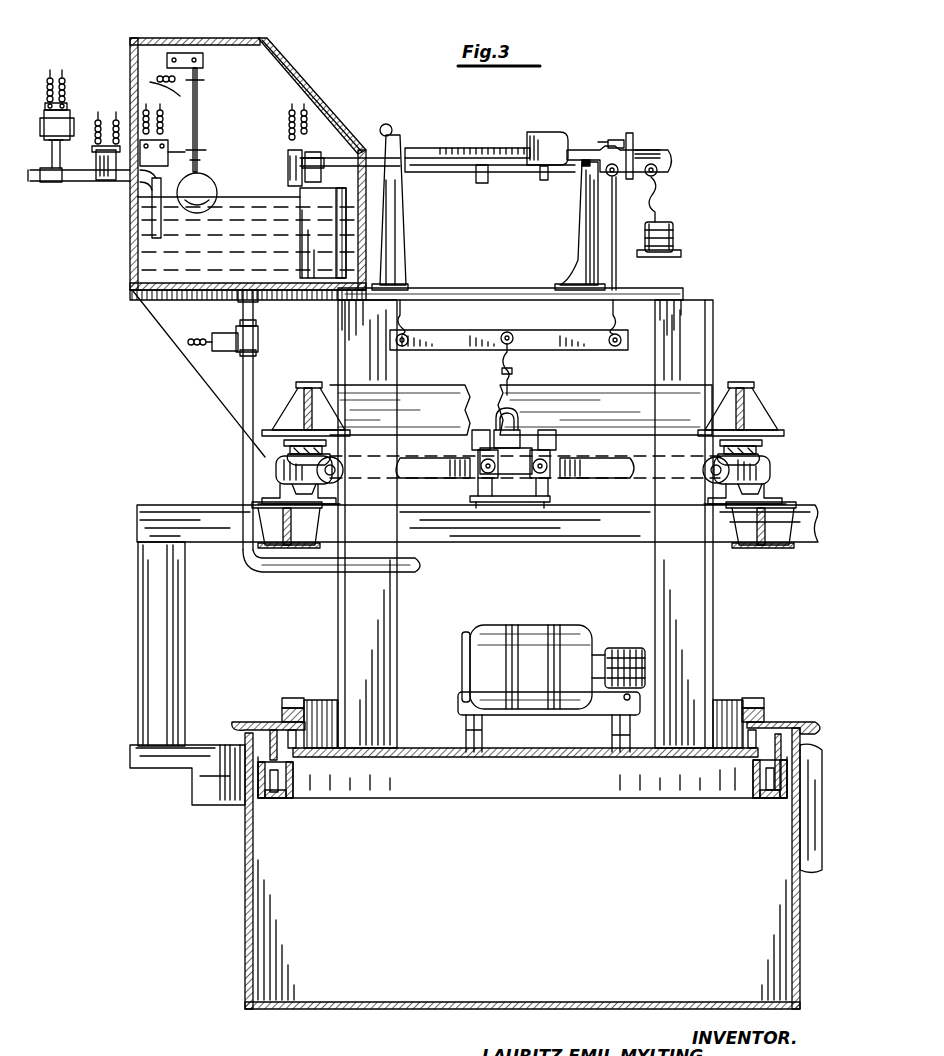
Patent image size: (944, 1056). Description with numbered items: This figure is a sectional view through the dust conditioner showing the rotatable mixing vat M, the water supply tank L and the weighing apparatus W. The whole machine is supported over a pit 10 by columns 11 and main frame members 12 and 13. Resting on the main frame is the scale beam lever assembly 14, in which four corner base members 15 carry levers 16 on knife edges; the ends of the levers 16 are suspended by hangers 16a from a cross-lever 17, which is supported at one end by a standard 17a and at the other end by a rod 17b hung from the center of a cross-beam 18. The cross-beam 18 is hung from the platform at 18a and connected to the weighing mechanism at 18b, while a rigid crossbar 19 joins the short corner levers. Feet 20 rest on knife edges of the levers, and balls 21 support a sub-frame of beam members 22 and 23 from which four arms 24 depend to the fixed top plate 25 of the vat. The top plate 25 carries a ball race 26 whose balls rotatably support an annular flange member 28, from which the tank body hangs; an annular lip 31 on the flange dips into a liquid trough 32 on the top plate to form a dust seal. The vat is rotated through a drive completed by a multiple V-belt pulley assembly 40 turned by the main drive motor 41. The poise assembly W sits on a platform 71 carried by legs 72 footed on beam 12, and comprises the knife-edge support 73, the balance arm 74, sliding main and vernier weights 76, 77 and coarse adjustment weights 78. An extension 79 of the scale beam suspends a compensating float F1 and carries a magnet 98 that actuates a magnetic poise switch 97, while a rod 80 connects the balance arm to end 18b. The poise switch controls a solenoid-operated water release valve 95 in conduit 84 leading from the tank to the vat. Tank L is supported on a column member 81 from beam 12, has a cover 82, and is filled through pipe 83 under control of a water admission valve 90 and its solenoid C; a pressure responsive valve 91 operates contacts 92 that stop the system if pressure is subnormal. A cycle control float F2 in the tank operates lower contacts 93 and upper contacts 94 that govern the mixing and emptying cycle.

The pit 10 is at (230, 788).
The columns 11 is at (175, 610).
The main frame member 12 is at (160, 508).
The main frame member 13 is at (290, 548).
The scale beam lever assembly 14 is at (265, 466).
The corner base members 15 is at (276, 488).
The levers 16 is at (418, 472).
The hangers 16a is at (480, 458).
The cross-lever 17 is at (500, 424).
The standard 17a is at (540, 458).
The rod 17b is at (510, 395).
The cross-beam 18 is at (472, 346).
The platform hanging point 18a is at (412, 335).
The cross-beam end 18b is at (614, 334).
The rigid crossbar 19 is at (333, 474).
The feet 20 is at (292, 452).
The balls 21 is at (282, 440).
The beam member 22 is at (672, 403).
The beam member 23 is at (322, 383).
The arms 24 is at (397, 640).
The top plate 25 is at (445, 758).
The ball race 26 is at (290, 768).
The annular flange member 28 is at (254, 722).
The annular lip 31 is at (760, 772).
The liquid trough 32 is at (270, 800).
The multiple V-belt pulley assembly 40 is at (620, 648).
The main drive motor 41 is at (582, 625).
The platform 71 is at (505, 298).
The legs 72 is at (382, 374).
The knife-edge support 73 is at (585, 228).
The balance arm 74 is at (452, 148).
The sliding main weight 76 is at (542, 134).
The vernier weight 77 is at (480, 184).
The coarse adjustment weights 78 is at (672, 232).
The extension of the scale beam 79 is at (355, 158).
The rod 80 is at (620, 275).
The column member 81 is at (210, 390).
The cover 82 is at (290, 92).
The pipe 83 is at (153, 220).
The conduit 84 is at (248, 372).
The water admission valve 90 is at (100, 182).
The pressure responsive valve 91 is at (76, 122).
The contacts 92 is at (43, 105).
The lower contacts 93 is at (165, 138).
The upper contacts 94 is at (190, 55).
The solenoid-operated water release valve 95 is at (228, 335).
The magnetic poise switch 97 is at (290, 150).
The magnet 98 is at (315, 152).
The solenoid C is at (126, 150).
The compensating float F1 is at (305, 195).
The cycle control float F2 is at (206, 185).
The water supply tank L is at (128, 264).
The rotatable mixing vat M is at (244, 918).
The weighing apparatus W is at (672, 164).